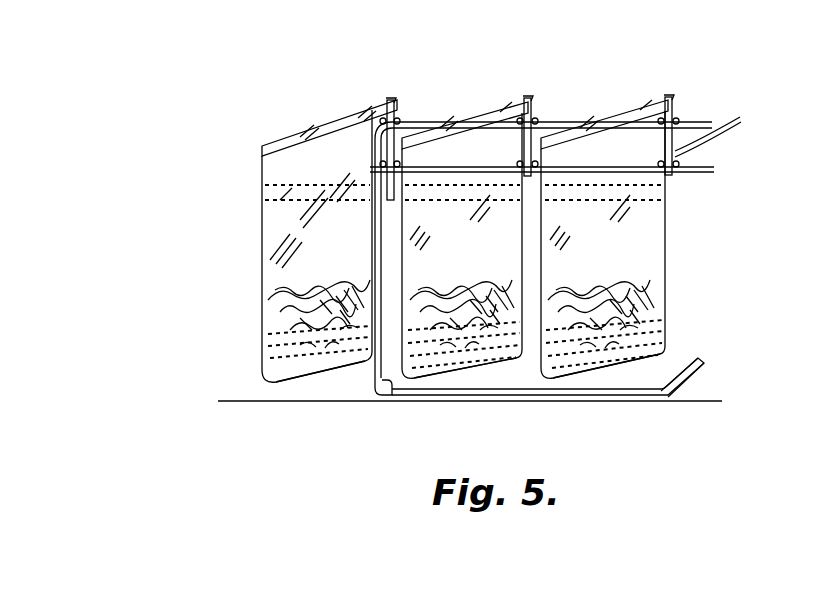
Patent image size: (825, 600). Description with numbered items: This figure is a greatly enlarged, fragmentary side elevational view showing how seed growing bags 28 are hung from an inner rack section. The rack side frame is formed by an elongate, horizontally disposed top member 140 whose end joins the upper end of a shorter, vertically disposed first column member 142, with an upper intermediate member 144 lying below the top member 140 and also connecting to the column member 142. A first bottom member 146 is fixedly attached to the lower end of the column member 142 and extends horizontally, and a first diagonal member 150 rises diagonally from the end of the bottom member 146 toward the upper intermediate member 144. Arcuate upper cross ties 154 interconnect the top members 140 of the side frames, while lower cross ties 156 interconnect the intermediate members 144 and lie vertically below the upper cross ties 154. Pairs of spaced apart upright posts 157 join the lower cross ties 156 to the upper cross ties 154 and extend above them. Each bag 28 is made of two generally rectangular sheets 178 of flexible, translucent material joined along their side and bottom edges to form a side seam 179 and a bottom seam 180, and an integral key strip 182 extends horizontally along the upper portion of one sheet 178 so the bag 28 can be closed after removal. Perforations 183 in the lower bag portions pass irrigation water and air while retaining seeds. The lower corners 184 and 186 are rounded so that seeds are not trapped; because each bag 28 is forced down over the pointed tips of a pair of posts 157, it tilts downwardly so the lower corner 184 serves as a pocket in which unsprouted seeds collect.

The bag 28 is at (255, 255).
The top member 140 is at (703, 121).
The first column member 142 is at (383, 396).
The upper intermediate member 144 is at (705, 168).
The first bottom member 146 is at (508, 398).
The first diagonal member 150 is at (690, 372).
The upper cross tie 154 is at (398, 118).
The lower cross tie 156 is at (740, 118).
The post 157 is at (388, 100).
The sheet 178 is at (262, 225).
The side seam 179 is at (262, 325).
The bottom seam 180 is at (320, 372).
The key strip 182 is at (316, 137).
The perforations 183 is at (283, 195).
The lower corner 184 is at (270, 380).
The lower corner 186 is at (658, 400).